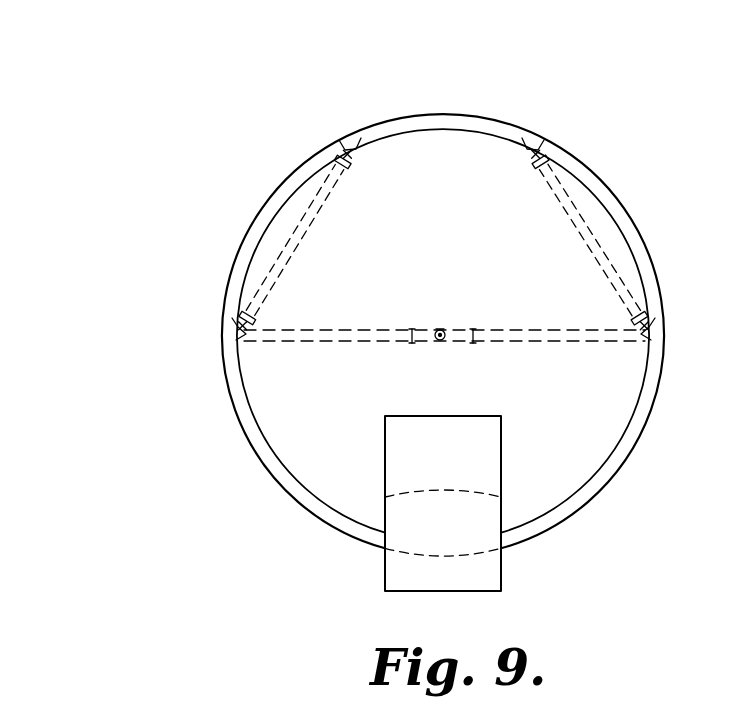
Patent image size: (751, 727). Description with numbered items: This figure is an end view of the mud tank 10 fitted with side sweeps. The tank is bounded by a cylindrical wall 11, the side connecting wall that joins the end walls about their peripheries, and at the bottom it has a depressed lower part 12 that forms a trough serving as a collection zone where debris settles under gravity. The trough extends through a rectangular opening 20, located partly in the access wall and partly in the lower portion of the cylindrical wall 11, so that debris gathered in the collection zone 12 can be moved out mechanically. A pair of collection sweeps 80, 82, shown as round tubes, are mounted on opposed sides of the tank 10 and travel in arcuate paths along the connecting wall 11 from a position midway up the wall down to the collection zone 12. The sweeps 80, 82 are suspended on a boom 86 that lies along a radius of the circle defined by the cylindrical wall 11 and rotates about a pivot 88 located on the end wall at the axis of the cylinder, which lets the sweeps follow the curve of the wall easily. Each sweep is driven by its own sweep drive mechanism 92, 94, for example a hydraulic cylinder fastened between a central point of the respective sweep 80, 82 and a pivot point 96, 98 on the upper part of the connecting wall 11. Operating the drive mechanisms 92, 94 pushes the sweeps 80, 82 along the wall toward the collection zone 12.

The mud tank 10 is at (570, 100).
The cylindrical wall 11 is at (609, 178).
The depressed lower part 12 is at (485, 448).
The rectangular opening 20 is at (395, 573).
The collection sweep 80 is at (222, 328).
The collection sweep 82 is at (665, 330).
The boom 86 is at (365, 333).
The pivot 88 is at (440, 330).
The sweep drive mechanism 92 is at (298, 225).
The sweep drive mechanism 94 is at (594, 231).
The pivot point 96 is at (355, 153).
The pivot point 98 is at (530, 153).